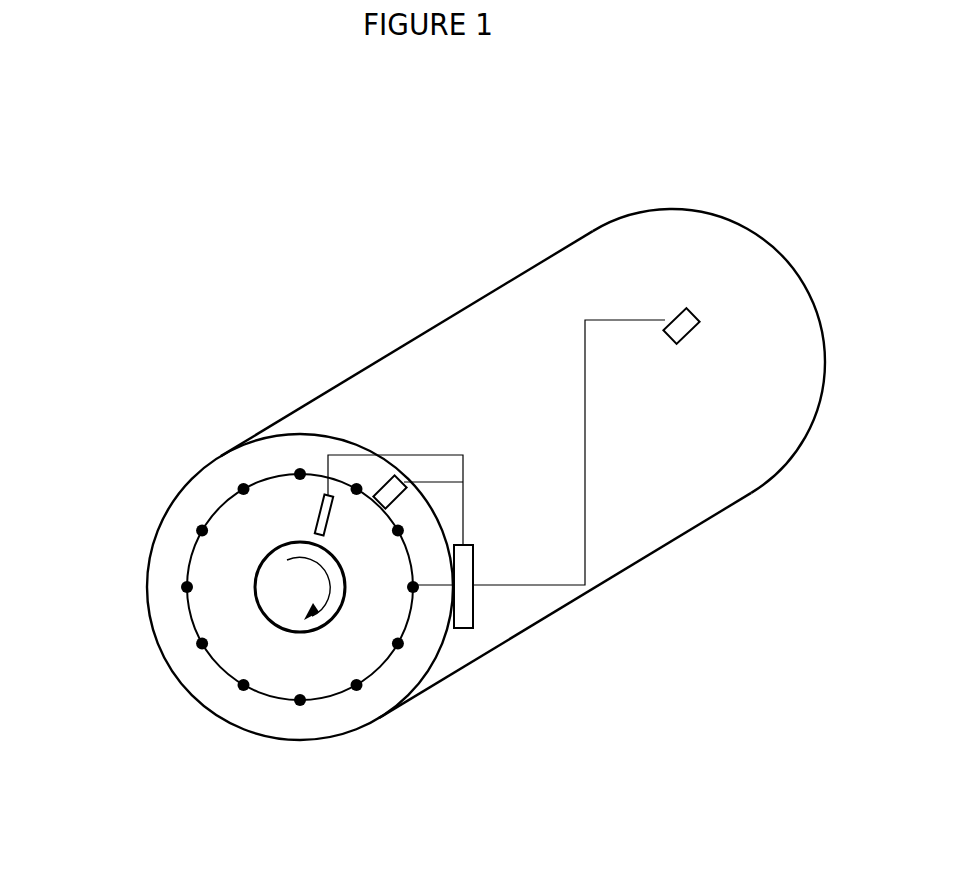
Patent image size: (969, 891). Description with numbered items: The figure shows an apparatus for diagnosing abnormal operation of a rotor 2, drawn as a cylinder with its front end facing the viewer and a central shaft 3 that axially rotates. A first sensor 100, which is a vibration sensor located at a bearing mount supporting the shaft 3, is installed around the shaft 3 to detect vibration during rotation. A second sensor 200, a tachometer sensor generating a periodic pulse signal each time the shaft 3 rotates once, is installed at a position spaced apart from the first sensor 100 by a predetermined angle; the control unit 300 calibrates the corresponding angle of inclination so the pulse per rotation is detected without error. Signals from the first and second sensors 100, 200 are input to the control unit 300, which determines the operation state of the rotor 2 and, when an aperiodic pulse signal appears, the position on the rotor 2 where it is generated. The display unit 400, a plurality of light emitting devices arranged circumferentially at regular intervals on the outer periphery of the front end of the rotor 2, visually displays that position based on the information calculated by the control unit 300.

The rotor 2 is at (679, 185).
The shaft 3 is at (255, 587).
The first sensor 100 is at (383, 486).
The second sensor 200 is at (311, 517).
The control unit 300 is at (473, 602).
The display unit 400 is at (194, 640).